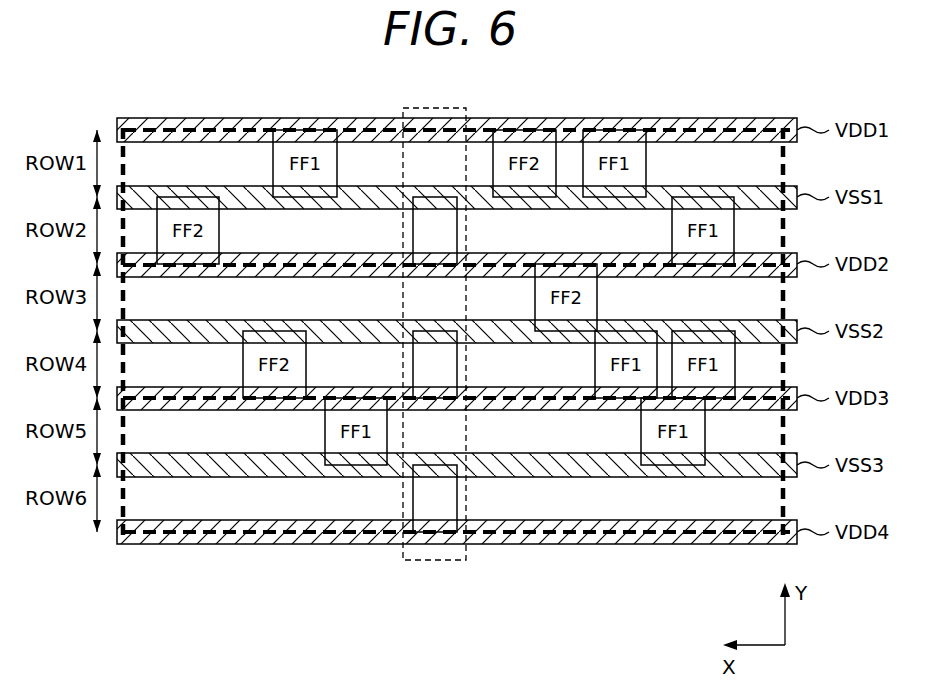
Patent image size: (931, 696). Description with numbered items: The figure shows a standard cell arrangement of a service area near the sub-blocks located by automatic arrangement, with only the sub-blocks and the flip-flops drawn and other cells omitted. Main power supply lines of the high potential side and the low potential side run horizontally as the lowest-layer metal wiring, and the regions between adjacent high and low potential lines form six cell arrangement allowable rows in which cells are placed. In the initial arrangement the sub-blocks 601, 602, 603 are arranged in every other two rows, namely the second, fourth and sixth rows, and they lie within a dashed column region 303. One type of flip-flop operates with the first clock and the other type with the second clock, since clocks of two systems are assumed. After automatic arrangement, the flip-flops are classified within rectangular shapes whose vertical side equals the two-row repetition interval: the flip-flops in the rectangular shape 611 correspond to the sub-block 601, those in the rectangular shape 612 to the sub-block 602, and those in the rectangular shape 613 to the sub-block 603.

The rectangular shape 611 is at (215, 128).
The rectangular shape 612 is at (290, 278).
The rectangular shape 613 is at (200, 534).
The sub-block 601 is at (458, 228).
The sub-block 602 is at (458, 362).
The sub-block 603 is at (458, 496).
The cell column region 303 is at (432, 561).